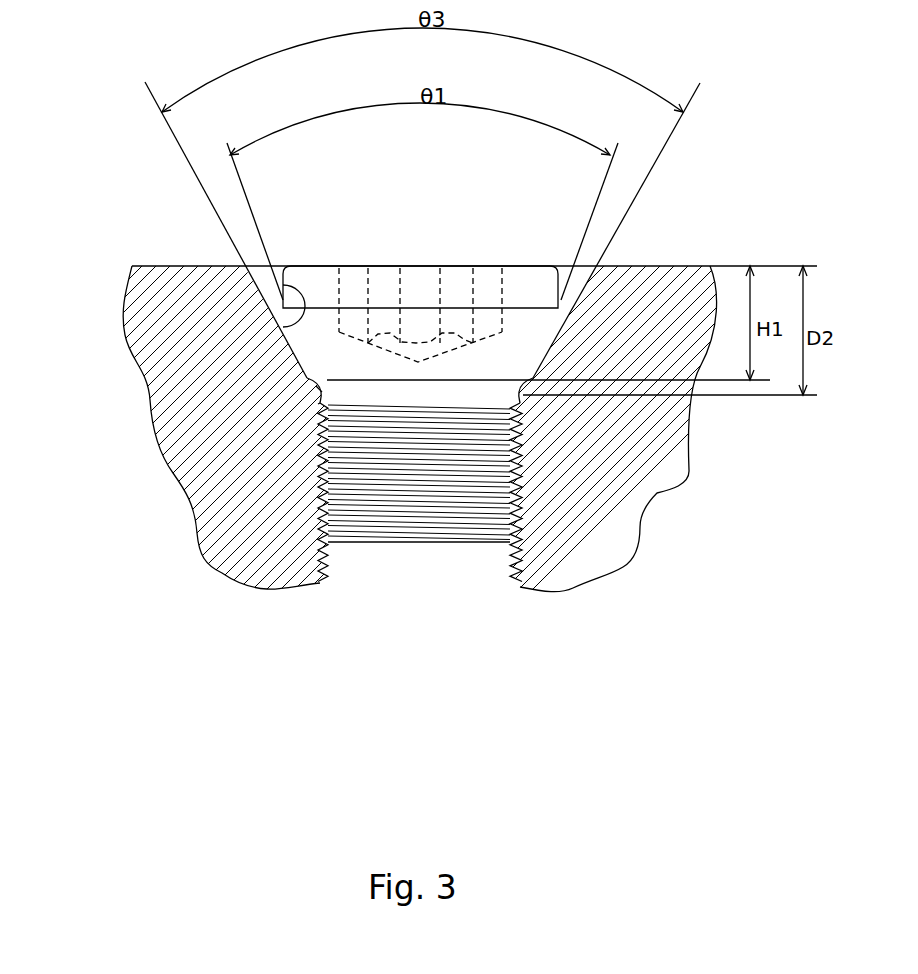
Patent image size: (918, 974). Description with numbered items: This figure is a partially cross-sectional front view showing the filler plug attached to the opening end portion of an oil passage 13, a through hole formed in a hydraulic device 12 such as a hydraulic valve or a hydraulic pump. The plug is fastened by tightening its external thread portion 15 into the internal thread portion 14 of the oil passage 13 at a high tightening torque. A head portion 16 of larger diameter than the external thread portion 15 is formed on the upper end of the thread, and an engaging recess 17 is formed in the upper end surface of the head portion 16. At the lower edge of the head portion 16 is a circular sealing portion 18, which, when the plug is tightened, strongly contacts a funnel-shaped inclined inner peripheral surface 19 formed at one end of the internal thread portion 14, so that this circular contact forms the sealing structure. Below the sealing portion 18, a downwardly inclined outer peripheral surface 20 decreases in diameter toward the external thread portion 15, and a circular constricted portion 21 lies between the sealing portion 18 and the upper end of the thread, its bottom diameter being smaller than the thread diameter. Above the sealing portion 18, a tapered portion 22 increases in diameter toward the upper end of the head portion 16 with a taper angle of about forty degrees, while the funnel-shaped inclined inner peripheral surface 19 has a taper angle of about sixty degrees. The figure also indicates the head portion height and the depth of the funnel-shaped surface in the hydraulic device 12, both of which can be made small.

The hydraulic device 12 is at (658, 490).
The oil passage 13 is at (468, 567).
The internal thread portion 14 is at (328, 557).
The external thread portion 15 is at (517, 487).
The head portion 16 is at (523, 283).
The engaging recess 17 is at (363, 280).
The sealing portion 18 is at (316, 386).
The funnel-shaped inclined inner peripheral surface 19 is at (283, 306).
The inclined outer peripheral surface 20 is at (318, 398).
The circular constricted portion 21 is at (318, 404).
The tapered portion 22 is at (288, 345).